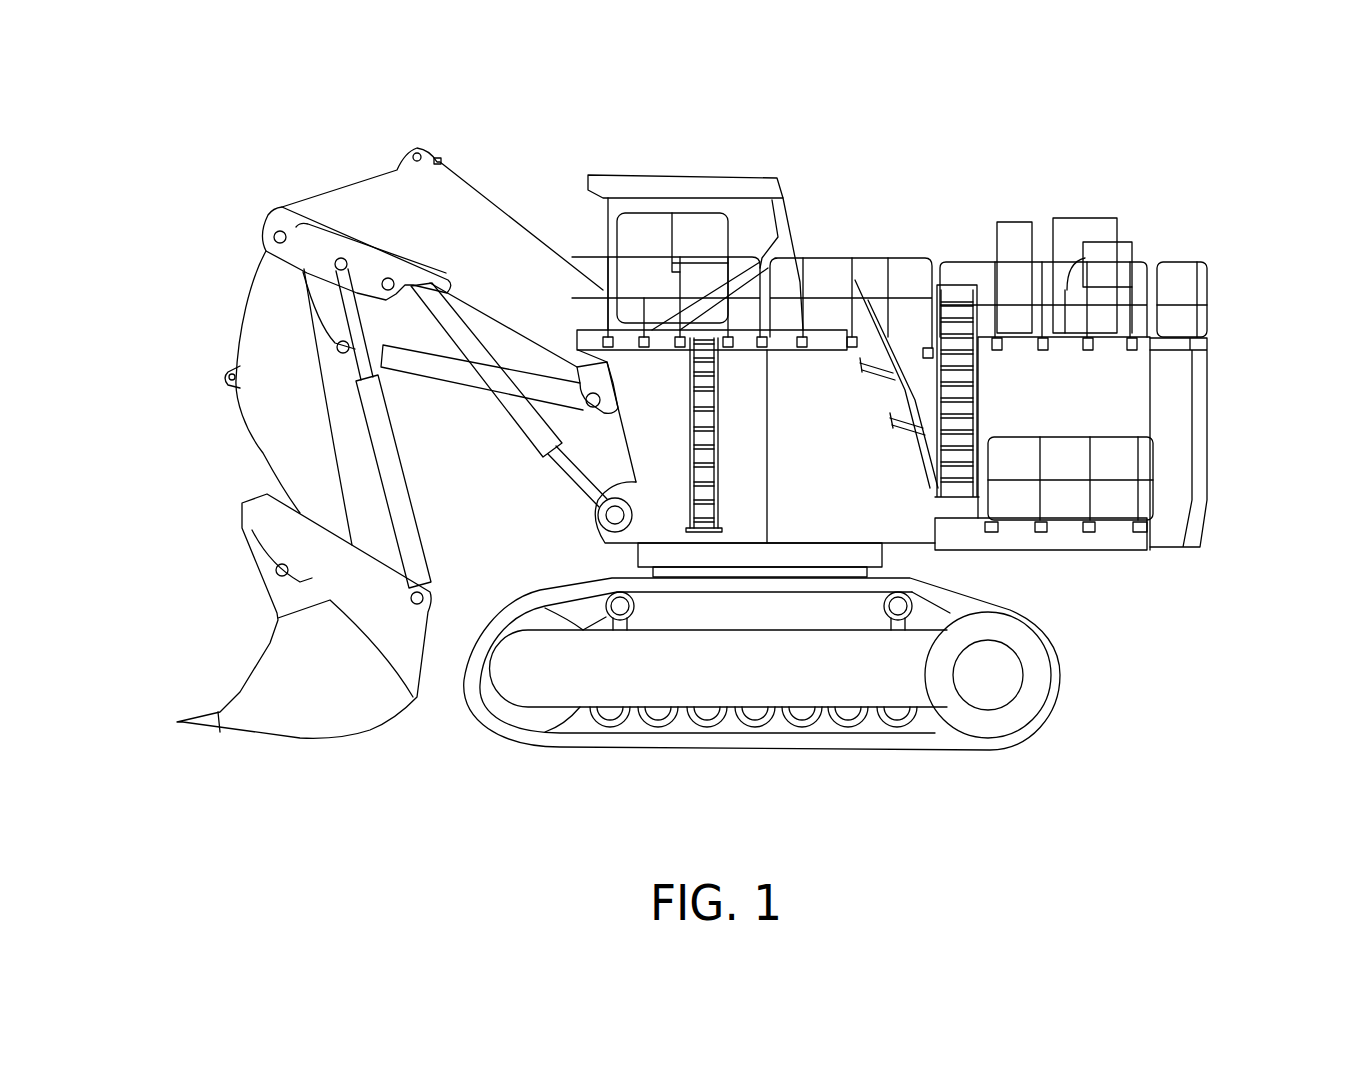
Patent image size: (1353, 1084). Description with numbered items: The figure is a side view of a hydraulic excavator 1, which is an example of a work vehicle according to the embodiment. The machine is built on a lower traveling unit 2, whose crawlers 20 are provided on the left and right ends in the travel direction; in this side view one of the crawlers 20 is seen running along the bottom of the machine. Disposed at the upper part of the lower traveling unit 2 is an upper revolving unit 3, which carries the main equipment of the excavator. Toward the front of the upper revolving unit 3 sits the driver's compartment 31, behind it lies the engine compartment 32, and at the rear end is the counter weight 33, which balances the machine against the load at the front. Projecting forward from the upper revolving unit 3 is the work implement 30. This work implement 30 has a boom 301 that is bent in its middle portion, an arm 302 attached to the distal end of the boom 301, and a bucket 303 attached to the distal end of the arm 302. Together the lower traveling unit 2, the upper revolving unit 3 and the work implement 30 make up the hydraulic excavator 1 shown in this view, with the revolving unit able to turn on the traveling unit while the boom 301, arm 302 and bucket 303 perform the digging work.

The hydraulic excavator 1 is at (562, 153).
The lower traveling unit 2 is at (1083, 646).
The crawlers 20 is at (862, 750).
The upper revolving unit 3 is at (832, 240).
The driver's compartment 31 is at (705, 233).
The engine compartment 32 is at (1097, 380).
The counter weight 33 is at (1198, 435).
The work implement 30 is at (222, 215).
The boom 301 is at (390, 198).
The arm 302 is at (280, 425).
The bucket 303 is at (347, 710).